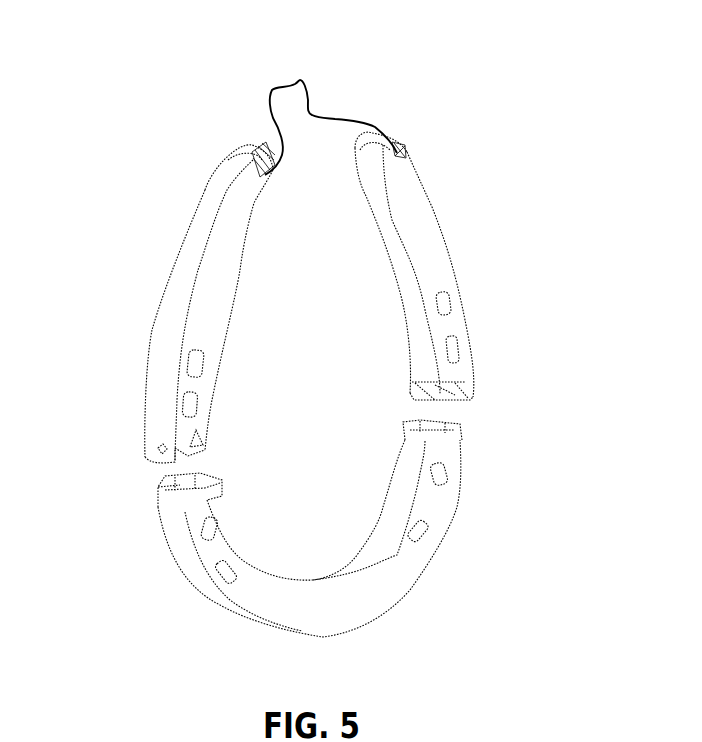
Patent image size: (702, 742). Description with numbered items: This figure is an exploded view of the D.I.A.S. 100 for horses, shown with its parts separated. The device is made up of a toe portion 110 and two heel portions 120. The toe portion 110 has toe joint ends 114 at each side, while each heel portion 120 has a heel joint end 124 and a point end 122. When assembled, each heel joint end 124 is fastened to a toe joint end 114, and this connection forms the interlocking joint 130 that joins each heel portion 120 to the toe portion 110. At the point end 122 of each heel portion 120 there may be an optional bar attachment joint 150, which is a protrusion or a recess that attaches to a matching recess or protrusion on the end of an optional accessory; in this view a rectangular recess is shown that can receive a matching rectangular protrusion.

The D.I.A.S. 100 is at (460, 136).
The toe portion 110 is at (323, 612).
The toe joint end 114 is at (427, 440).
The heel portion 120 is at (432, 270).
The point end 122 is at (393, 172).
The heel joint end 124 is at (423, 372).
The interlocking joint 130 is at (466, 417).
The bar attachment joint 150 is at (329, 113).